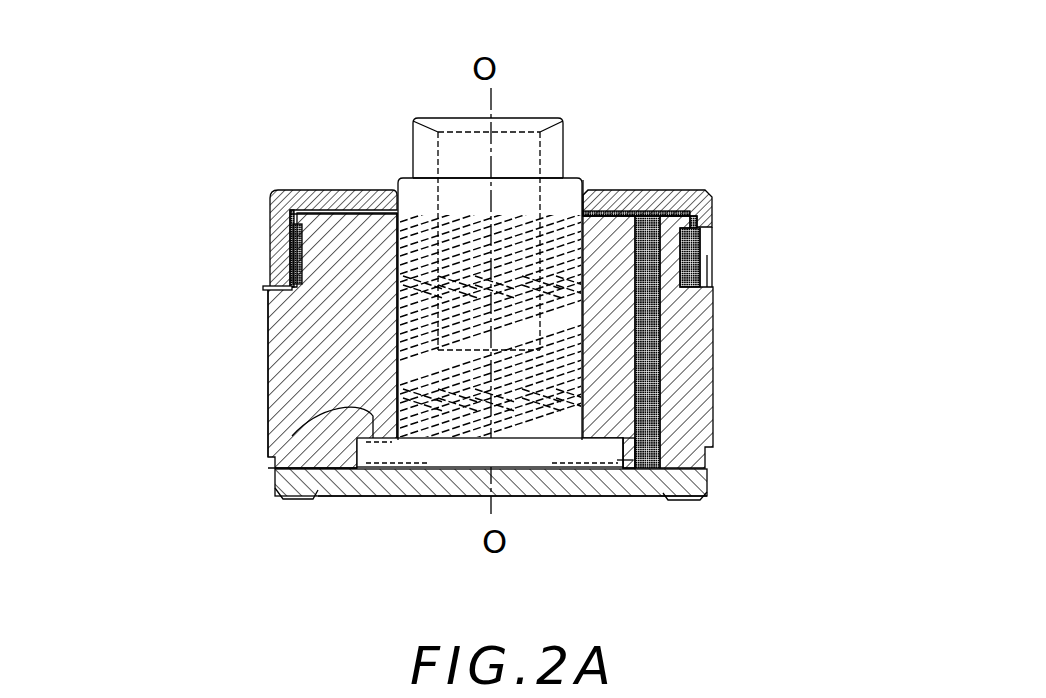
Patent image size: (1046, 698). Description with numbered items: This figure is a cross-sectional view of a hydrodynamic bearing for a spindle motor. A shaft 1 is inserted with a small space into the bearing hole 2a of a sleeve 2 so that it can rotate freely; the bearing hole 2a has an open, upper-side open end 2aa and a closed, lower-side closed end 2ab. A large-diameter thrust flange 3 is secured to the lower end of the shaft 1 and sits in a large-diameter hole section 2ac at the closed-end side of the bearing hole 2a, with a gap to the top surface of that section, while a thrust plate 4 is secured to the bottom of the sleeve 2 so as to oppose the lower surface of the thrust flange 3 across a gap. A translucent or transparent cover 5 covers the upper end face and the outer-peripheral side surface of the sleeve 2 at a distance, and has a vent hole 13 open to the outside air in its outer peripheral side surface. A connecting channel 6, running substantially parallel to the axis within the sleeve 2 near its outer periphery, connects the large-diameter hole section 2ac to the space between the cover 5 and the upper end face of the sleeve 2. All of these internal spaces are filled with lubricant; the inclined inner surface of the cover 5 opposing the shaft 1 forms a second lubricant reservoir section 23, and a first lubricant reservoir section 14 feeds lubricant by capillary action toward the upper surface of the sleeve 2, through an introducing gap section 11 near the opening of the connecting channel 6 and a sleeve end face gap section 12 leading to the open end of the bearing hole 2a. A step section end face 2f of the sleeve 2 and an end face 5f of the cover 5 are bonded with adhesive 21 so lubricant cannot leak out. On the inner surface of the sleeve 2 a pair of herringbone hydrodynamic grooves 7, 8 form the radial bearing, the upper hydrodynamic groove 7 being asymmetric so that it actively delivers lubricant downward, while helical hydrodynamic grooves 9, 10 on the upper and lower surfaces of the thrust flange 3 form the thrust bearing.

The shaft 1 is at (513, 150).
The sleeve 2 is at (488, 413).
The bearing hole 2a is at (393, 217).
The open end 2aa is at (385, 303).
The closed end 2ab is at (456, 470).
The large-diameter hole section 2ac is at (292, 436).
The step section end face 2f is at (267, 315).
The large-diameter thrust flange 3 is at (530, 450).
The thrust plate 4 is at (507, 471).
The cover 5 is at (693, 188).
The end face of the cover 5f is at (280, 272).
The connecting channel 6 is at (620, 372).
The upper hydrodynamic groove 7 is at (622, 284).
The lower hydrodynamic groove 8 is at (640, 432).
The hydrodynamic groove 9 is at (637, 457).
The hydrodynamic groove 10 is at (597, 473).
The introducing gap section 11 is at (640, 190).
The sleeve end face gap section 12 is at (330, 207).
The vent hole 13 is at (713, 277).
The first lubricant reservoir section 14 is at (710, 232).
The adhesive 21 is at (260, 287).
The second lubricant reservoir section 23 is at (586, 188).